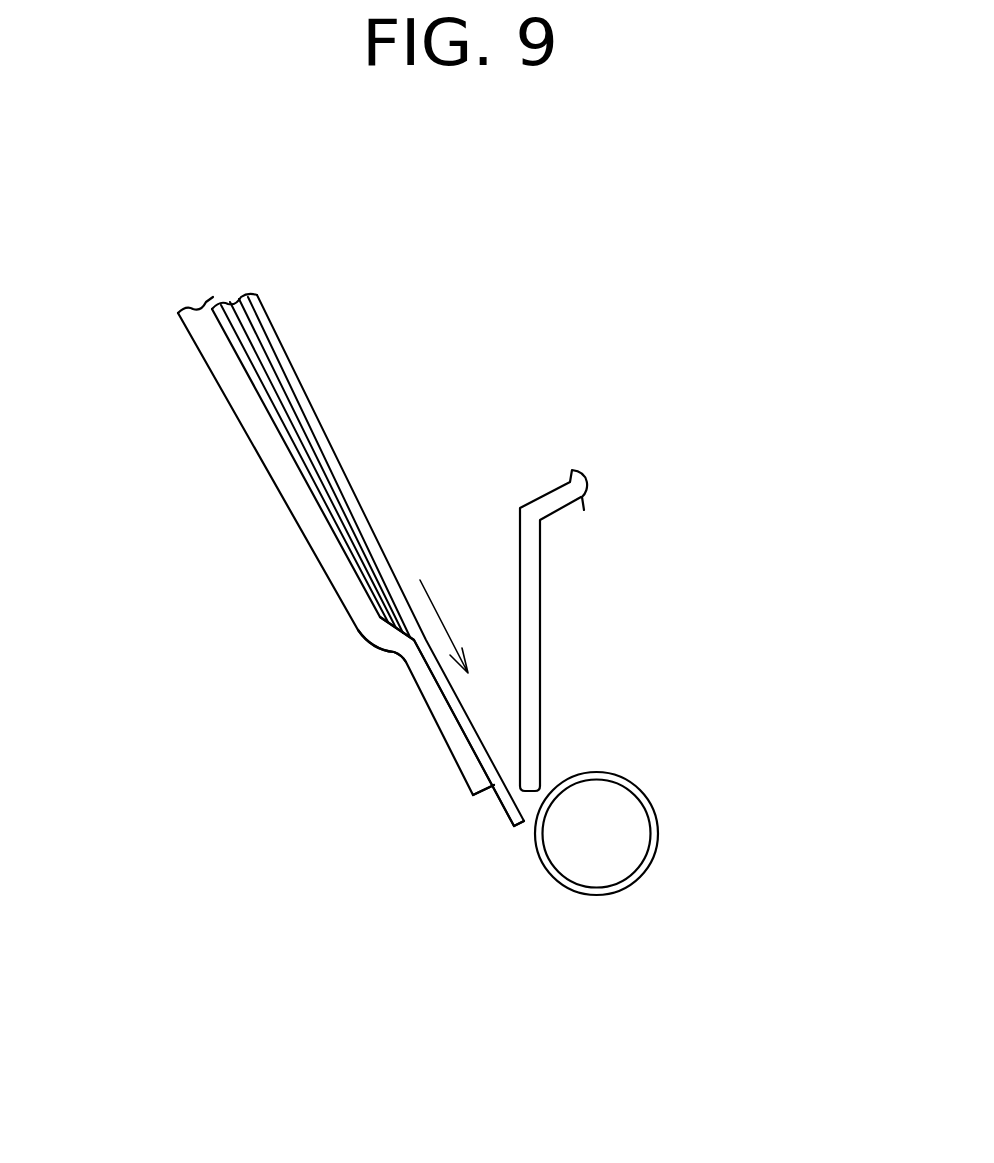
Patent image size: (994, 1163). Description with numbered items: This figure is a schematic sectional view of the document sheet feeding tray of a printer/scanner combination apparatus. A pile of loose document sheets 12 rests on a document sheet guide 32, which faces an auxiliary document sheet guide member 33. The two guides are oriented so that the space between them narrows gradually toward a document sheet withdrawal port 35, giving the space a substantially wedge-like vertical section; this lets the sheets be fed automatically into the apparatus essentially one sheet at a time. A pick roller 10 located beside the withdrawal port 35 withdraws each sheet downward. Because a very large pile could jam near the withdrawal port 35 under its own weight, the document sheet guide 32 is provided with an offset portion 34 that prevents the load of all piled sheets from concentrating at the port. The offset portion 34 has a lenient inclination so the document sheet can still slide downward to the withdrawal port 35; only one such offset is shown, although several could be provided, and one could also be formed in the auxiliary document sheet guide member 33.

The pick roller 10 is at (638, 788).
The document sheets 12 is at (280, 358).
The document sheet guide 32 is at (247, 397).
The auxiliary document sheet guide member 33 is at (540, 580).
The offset portion 34 is at (393, 635).
The document sheet withdrawal port 35 is at (497, 802).